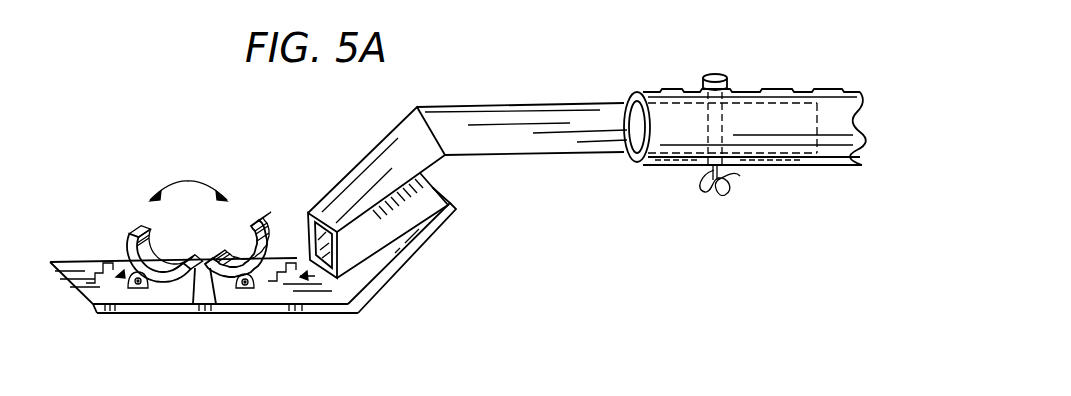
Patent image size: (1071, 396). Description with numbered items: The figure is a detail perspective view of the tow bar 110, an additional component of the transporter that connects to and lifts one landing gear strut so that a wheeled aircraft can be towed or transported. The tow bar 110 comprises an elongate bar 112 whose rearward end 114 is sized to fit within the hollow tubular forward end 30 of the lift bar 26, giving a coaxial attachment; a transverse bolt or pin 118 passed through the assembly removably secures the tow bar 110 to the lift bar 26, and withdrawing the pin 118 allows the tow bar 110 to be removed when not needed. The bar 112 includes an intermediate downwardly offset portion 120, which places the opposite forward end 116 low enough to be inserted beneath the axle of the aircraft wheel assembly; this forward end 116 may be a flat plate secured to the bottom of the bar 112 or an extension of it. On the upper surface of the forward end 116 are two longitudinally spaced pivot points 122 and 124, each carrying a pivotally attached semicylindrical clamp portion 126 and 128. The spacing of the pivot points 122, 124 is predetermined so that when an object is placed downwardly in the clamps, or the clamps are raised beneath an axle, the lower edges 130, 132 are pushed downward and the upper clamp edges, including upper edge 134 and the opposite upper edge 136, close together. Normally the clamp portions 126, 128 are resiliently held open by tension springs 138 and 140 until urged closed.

The tow bar 110 is at (258, 150).
The elongate bar 112 is at (513, 157).
The rearward end 114 is at (790, 160).
The forward end 116 is at (272, 313).
The transverse bolt or pin 118 is at (703, 85).
The intermediate downwardly offset portion 120 is at (365, 157).
The pivot point 122 is at (130, 296).
The pivot point 124 is at (263, 290).
The semicylindrical clamp portion 126 is at (118, 228).
The semicylindrical clamp portion 128 is at (283, 250).
The lower edge 130 is at (192, 300).
The lower edge 132 is at (214, 286).
The upper clamp edge 134 is at (143, 208).
The right jaw rotation direction 136 is at (247, 212).
The tension spring 138 is at (120, 263).
The tension spring 140 is at (357, 295).
The lift bar 26 is at (840, 92).
The lifting bar forward end 30 is at (638, 168).